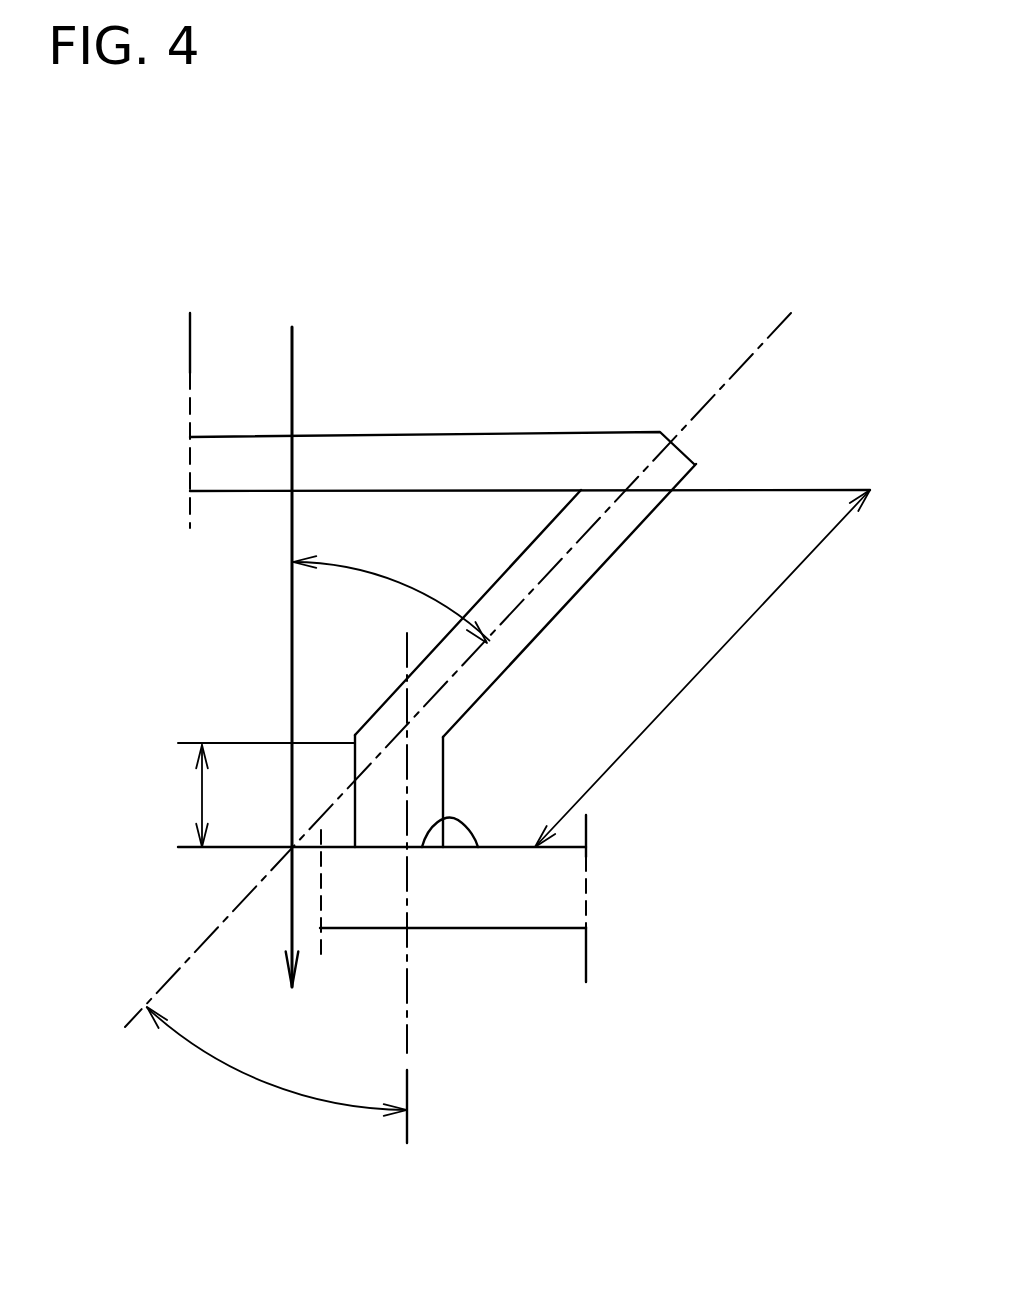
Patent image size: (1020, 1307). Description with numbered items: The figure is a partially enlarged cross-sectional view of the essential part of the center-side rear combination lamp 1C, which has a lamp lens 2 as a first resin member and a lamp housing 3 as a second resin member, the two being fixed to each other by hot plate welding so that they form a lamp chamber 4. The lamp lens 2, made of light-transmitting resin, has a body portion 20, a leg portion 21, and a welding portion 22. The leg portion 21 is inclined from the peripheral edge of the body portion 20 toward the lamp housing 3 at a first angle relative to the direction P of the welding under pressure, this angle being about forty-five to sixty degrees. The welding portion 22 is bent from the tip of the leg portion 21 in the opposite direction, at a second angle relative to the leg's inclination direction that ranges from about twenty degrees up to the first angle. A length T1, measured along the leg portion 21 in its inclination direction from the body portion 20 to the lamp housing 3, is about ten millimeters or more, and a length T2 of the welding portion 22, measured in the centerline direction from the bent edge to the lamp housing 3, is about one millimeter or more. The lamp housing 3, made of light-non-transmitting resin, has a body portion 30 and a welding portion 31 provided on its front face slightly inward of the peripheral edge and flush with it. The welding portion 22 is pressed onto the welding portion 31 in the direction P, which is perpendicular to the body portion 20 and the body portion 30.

The center-side rear combination lamp 1C is at (300, 293).
The lamp lens 2 is at (387, 437).
The body portion 20 is at (490, 434).
The leg portion 21 is at (564, 604).
The welding portion 22 is at (443, 773).
The lamp housing 3 is at (342, 932).
The body portion 30 is at (382, 932).
The welding portion 31 is at (478, 847).
The lamp chamber 4 is at (208, 628).
The direction of welding under pressure P is at (292, 360).
The length between leg portion and welding portion T1 is at (695, 670).
The length of welding portion T2 is at (198, 790).